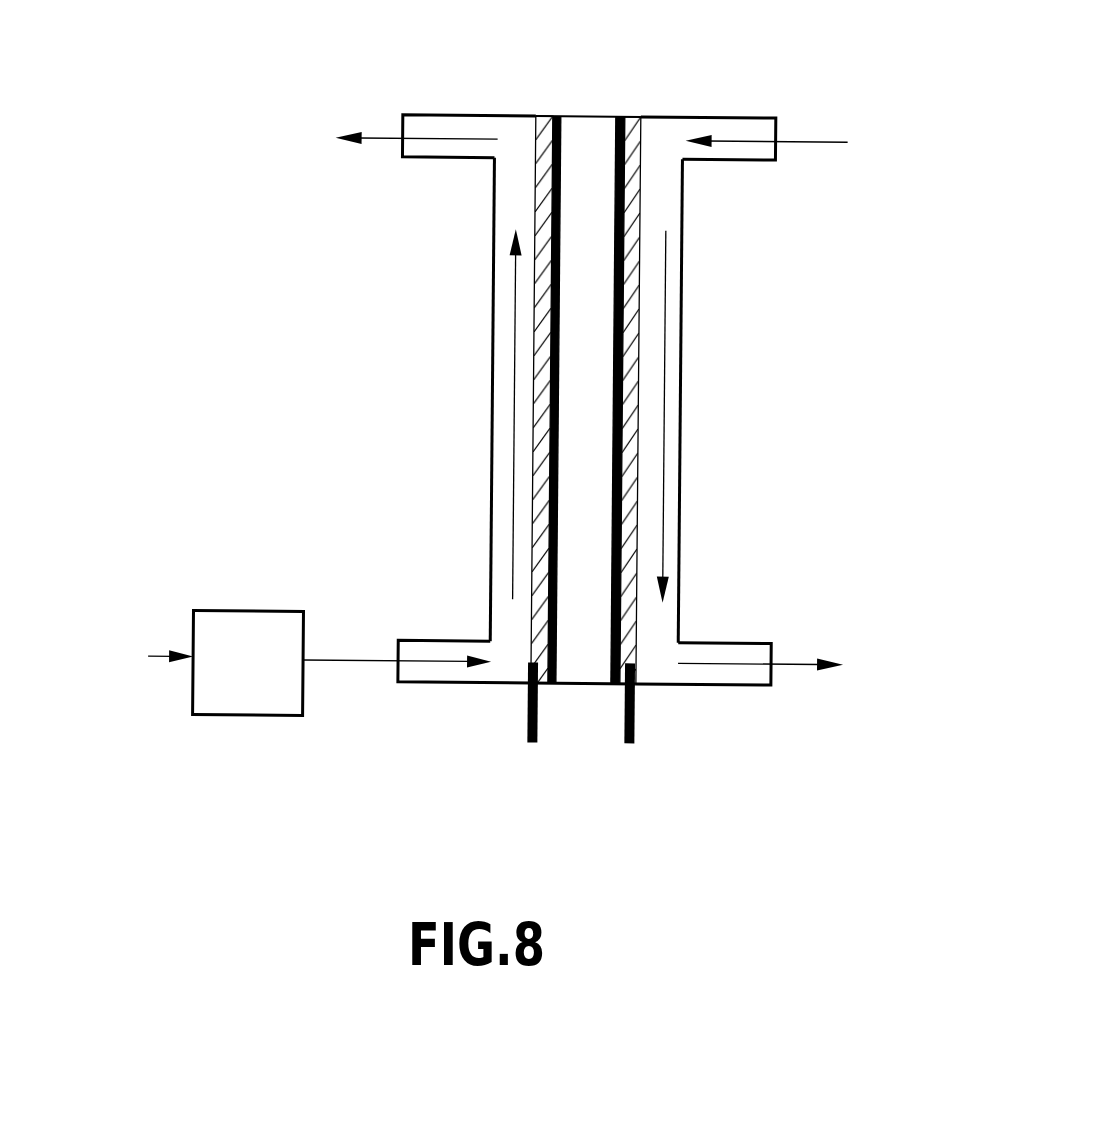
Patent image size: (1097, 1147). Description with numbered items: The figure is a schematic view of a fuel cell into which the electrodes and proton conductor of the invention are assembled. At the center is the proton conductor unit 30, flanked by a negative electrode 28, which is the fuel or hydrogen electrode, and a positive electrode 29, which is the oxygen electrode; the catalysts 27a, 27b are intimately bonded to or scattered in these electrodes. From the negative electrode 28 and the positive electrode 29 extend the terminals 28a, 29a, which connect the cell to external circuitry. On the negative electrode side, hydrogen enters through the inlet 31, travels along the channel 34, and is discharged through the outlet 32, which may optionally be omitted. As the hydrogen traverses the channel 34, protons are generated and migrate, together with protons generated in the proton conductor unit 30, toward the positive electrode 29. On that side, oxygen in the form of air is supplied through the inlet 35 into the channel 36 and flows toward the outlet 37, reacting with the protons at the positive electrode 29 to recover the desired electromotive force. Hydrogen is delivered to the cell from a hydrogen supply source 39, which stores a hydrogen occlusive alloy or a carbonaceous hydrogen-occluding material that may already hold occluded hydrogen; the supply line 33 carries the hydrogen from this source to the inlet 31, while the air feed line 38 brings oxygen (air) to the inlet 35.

The catalyst 27a is at (553, 193).
The catalyst 27b is at (625, 232).
The negative electrode 28 is at (543, 313).
The terminal 28a is at (538, 735).
The positive electrode 29 is at (640, 182).
The terminal 29a is at (640, 733).
The proton conductor unit 30 is at (585, 130).
The inlet 31 is at (433, 670).
The outlet 32 is at (434, 130).
The hydrogen supply line 33 is at (372, 657).
The channel 34 is at (525, 462).
The inlet 35 is at (738, 138).
The channel 36 is at (651, 444).
The outlet 37 is at (740, 660).
The oxygen (air) supply line 38 is at (818, 145).
The hydrogen supply source 39 is at (245, 625).